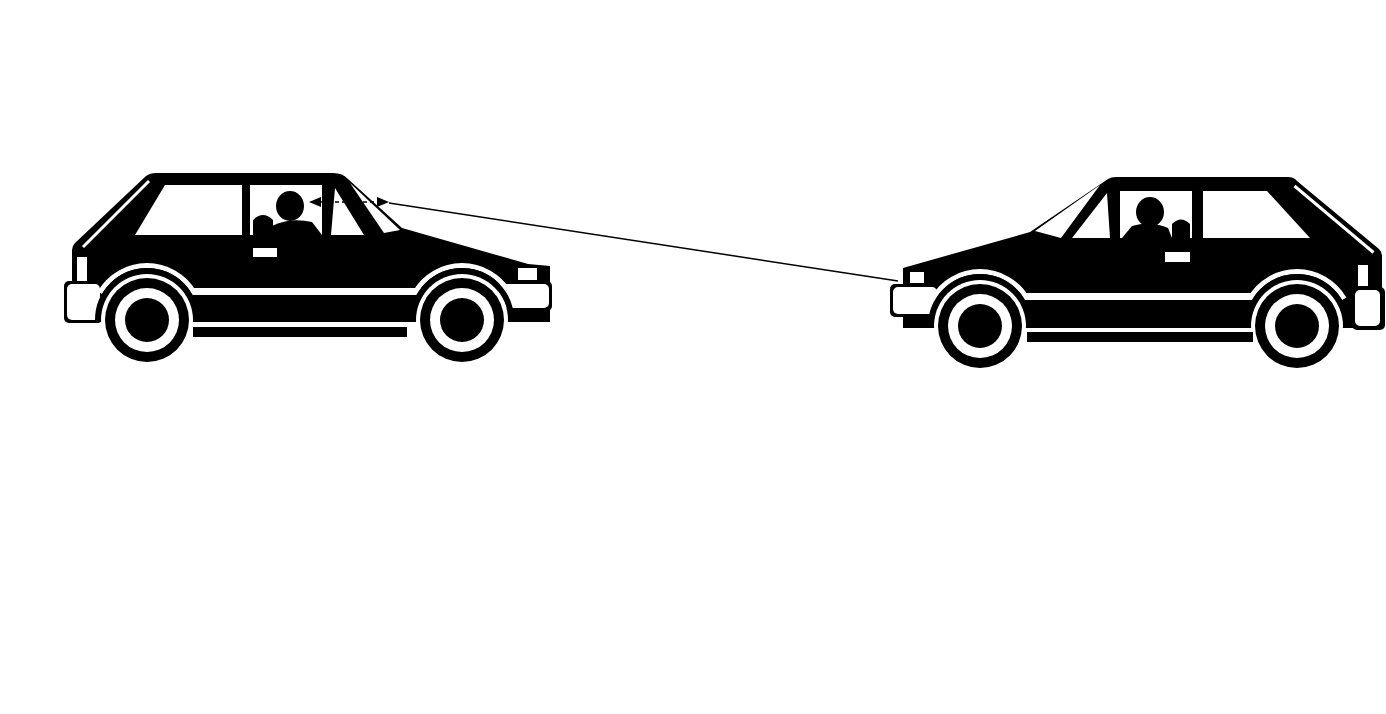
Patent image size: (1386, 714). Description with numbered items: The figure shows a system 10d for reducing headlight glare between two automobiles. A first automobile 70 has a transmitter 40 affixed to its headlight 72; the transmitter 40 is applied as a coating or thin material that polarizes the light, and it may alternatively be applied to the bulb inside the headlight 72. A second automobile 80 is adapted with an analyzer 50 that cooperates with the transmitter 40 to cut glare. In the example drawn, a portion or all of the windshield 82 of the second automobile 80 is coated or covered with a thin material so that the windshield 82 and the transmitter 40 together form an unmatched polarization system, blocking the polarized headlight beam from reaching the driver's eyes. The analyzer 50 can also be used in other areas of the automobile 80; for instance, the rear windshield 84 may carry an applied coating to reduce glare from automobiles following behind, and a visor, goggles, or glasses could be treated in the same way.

The system 10d is at (861, 75).
The transmitter 40 is at (871, 294).
The analyzer 50 is at (381, 168).
The first automobile 70 is at (1185, 177).
The headlight 72 is at (913, 277).
The second automobile 80 is at (267, 173).
The windshield 82 is at (390, 220).
The rear windshield 84 is at (140, 189).